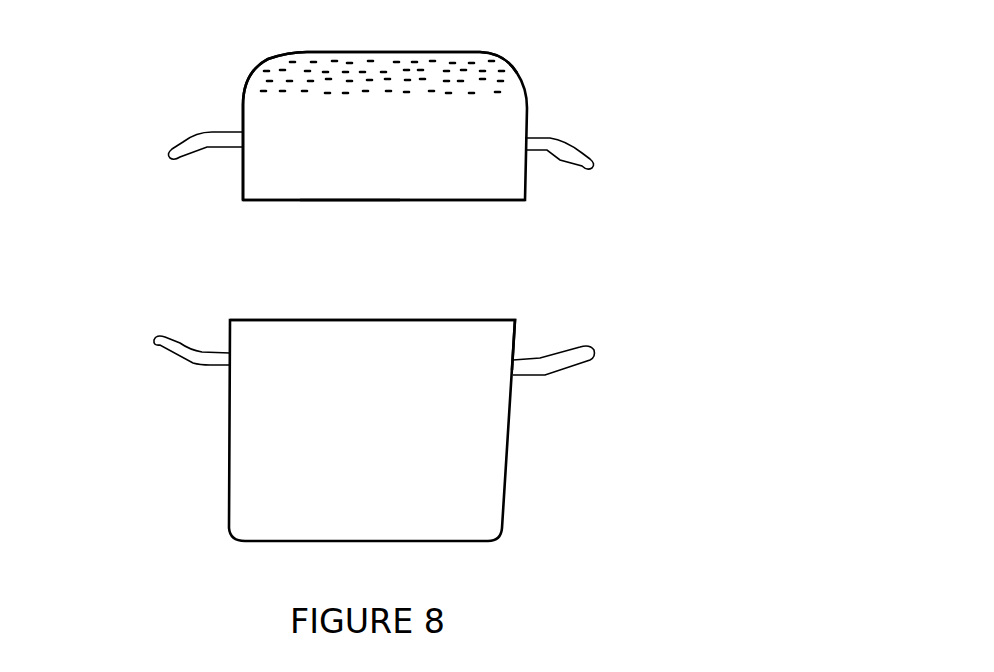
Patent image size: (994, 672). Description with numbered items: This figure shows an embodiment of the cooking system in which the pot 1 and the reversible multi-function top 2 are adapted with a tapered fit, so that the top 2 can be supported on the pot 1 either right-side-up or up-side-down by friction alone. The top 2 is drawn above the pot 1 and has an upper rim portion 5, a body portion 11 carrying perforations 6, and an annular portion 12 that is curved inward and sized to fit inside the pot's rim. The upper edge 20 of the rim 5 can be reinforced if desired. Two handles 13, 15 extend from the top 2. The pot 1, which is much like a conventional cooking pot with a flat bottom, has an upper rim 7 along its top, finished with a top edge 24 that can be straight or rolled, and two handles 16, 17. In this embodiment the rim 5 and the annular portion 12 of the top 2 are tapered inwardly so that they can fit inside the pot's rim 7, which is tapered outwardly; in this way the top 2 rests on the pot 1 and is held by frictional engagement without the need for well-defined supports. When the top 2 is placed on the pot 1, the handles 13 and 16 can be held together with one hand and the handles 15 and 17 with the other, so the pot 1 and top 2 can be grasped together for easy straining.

The pot 1 is at (200, 425).
The top 2 is at (572, 68).
The upper rim portion 5 is at (398, 188).
The perforations 6 is at (478, 68).
The upper rim 7 is at (478, 328).
The body portion 11 is at (317, 40).
The annular portion 12 is at (243, 97).
The handle 13 is at (588, 160).
The handle 15 is at (187, 148).
The handle 16 is at (595, 358).
The handle 17 is at (172, 349).
The upper edge 20 is at (352, 202).
The top edge 24 is at (377, 317).